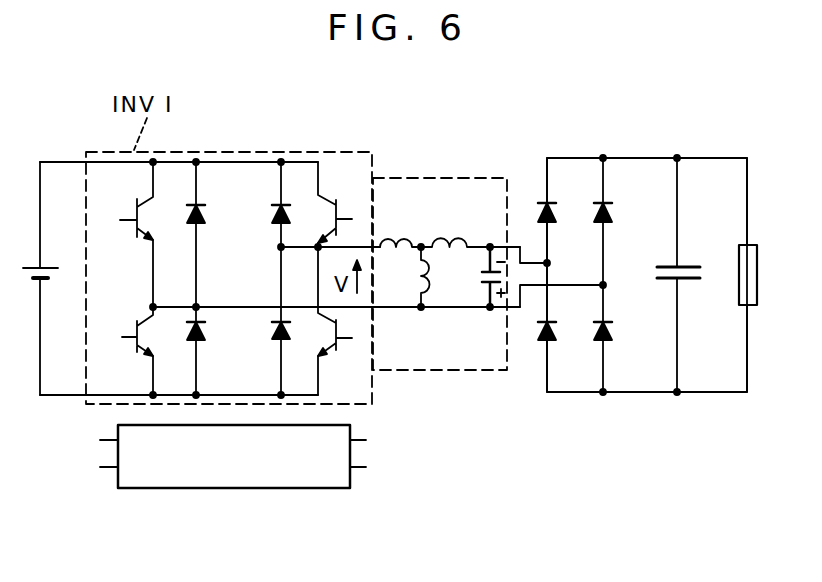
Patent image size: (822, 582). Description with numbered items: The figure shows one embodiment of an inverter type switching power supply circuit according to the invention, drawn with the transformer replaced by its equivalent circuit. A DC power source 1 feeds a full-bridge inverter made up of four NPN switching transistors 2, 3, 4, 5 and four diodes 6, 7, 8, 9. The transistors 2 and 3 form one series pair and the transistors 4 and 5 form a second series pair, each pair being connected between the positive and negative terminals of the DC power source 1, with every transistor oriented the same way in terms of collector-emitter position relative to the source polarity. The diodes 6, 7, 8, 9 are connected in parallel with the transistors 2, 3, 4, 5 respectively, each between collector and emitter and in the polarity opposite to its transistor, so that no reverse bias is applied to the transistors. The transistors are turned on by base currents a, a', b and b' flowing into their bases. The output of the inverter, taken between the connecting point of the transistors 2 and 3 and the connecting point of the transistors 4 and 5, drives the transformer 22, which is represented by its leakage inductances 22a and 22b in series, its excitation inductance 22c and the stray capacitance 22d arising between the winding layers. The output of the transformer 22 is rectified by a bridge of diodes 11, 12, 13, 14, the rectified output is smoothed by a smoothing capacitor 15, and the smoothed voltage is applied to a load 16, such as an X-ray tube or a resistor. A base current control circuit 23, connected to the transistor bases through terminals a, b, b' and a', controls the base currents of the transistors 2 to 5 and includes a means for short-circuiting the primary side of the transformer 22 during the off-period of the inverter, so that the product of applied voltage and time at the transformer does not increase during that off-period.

The DC power source 1 is at (50, 262).
The switching element 2 is at (135, 210).
The switching element 3 is at (133, 354).
The switching element 4 is at (342, 208).
The switching element 5 is at (340, 350).
The diode 6 is at (182, 212).
The diode 7 is at (183, 344).
The diode 8 is at (294, 212).
The diode 9 is at (289, 344).
The diode 11 is at (537, 216).
The diode 12 is at (538, 340).
The diode 13 is at (618, 216).
The diode 14 is at (618, 340).
The smoothing capacitor 15 is at (690, 261).
The load 16 is at (760, 263).
The transformer 22 is at (413, 176).
The leakage inductance 22a is at (396, 242).
The leakage inductance 22b is at (462, 242).
The excitation inductance 22c is at (413, 282).
The stray capacitance 22d is at (470, 282).
The base current control circuit 23 is at (240, 490).